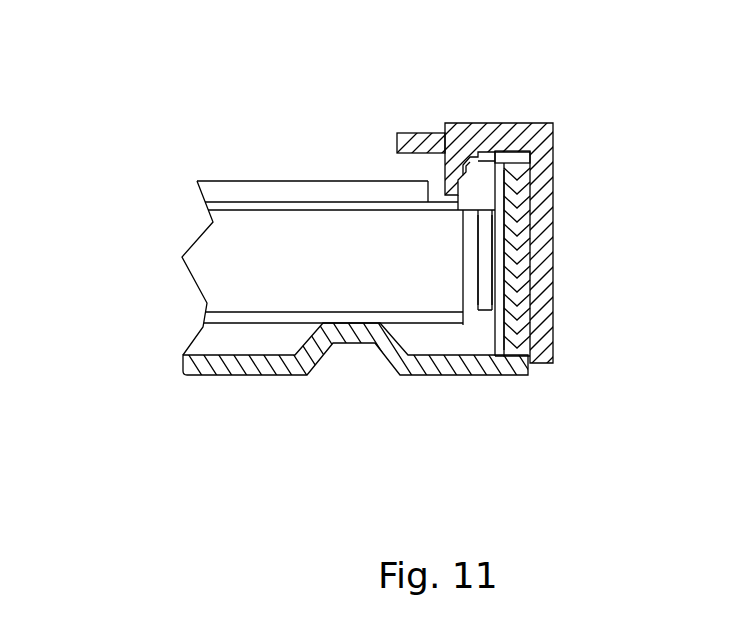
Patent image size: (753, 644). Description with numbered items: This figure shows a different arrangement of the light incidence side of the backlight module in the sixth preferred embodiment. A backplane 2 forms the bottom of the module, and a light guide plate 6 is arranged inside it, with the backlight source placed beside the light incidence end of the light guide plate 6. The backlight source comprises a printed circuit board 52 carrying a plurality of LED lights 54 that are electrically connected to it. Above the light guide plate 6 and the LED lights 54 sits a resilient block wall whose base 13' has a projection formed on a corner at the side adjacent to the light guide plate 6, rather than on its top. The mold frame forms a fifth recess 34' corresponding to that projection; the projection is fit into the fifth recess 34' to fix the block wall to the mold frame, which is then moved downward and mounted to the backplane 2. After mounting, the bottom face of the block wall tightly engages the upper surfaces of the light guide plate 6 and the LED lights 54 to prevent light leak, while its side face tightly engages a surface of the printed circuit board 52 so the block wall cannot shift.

The light guide plate 6 is at (222, 264).
The backplane 2 is at (282, 373).
The fifth recess 34' is at (441, 96).
The base 13' is at (366, 146).
The LED lights 54 is at (487, 283).
The printed circuit board 52 is at (500, 335).